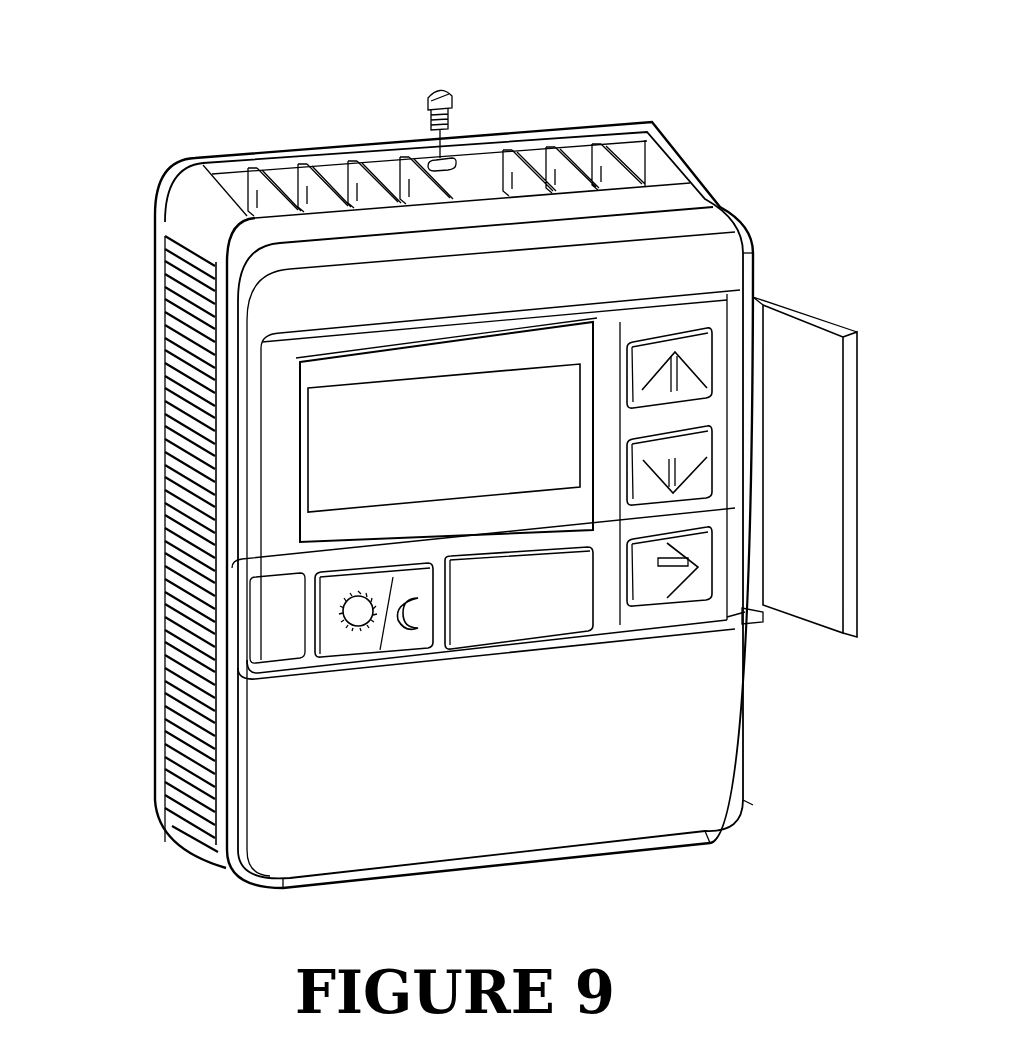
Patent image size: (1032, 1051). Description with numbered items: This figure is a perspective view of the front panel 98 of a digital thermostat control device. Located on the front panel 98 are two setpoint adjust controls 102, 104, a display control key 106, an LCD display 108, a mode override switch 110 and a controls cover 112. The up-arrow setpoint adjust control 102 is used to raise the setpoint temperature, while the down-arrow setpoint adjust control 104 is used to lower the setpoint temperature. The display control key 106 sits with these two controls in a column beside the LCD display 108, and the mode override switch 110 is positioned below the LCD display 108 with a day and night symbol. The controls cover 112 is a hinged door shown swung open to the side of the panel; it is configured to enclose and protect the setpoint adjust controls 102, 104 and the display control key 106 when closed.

The front panel 98 is at (463, 86).
The up-arrow setpoint adjust control 102 is at (705, 321).
The down-arrow setpoint adjust control 104 is at (687, 463).
The display control key 106 is at (708, 603).
The LCD display 108 is at (348, 460).
The mode override switch 110 is at (403, 657).
The controls cover 112 is at (857, 530).